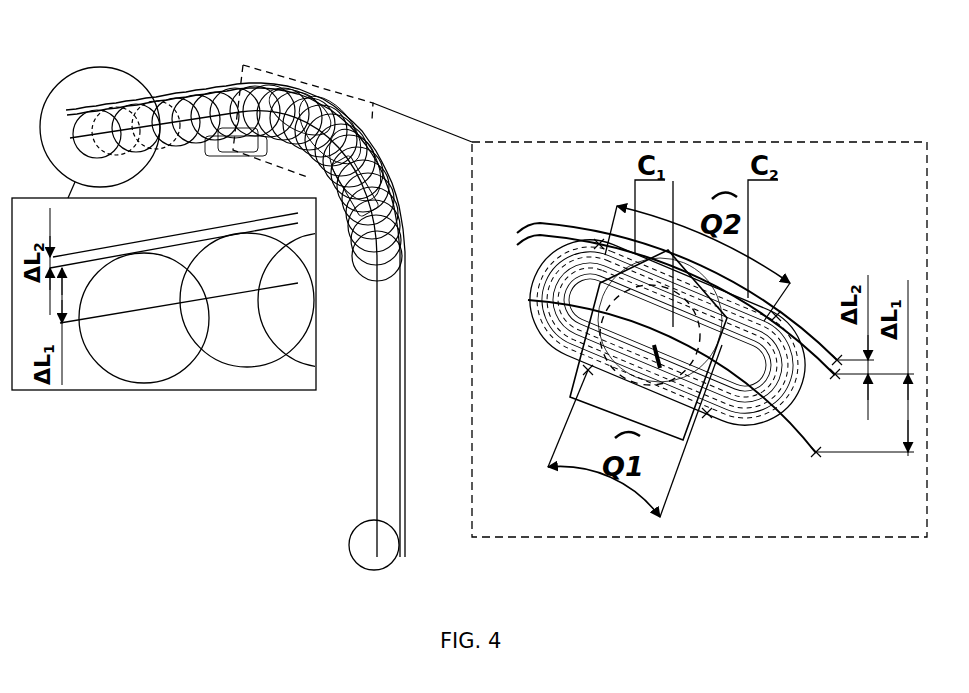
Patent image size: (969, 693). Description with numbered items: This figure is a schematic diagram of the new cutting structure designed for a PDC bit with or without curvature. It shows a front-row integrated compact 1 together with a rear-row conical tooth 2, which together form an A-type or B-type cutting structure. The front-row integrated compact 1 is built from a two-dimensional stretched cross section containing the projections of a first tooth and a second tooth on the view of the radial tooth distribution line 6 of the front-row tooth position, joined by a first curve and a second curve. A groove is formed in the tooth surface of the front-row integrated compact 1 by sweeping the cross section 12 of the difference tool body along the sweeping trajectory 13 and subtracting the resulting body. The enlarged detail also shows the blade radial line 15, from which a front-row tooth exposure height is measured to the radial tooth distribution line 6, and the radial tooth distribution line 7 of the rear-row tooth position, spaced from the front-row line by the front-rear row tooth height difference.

The front-row integrated compact 1 is at (690, 181).
The rear-row conical tooth 2 is at (570, 397).
The radial tooth distribution line of a front-row tooth position 6 is at (107, 108).
The radial tooth distribution line of a rear-row tooth position 7 is at (117, 103).
The cross section of the difference tool body 12 is at (656, 358).
The sweeping trajectory 13 is at (740, 395).
The blade radial line 15 is at (93, 137).